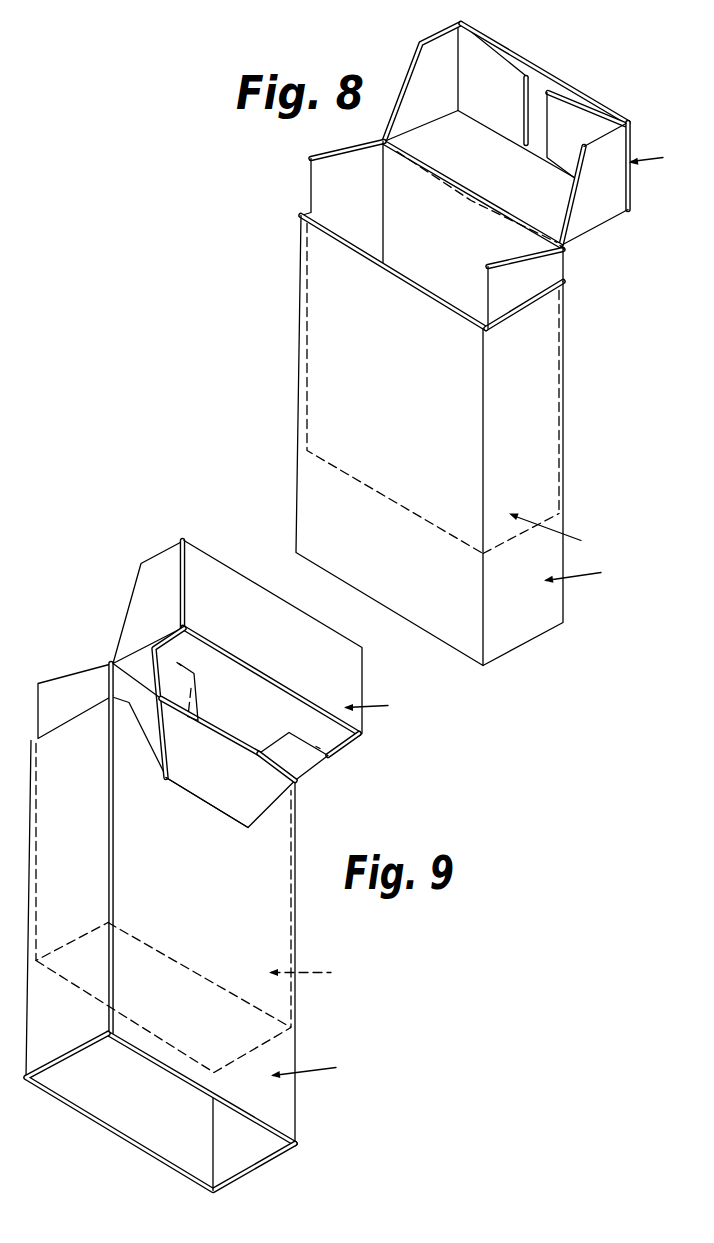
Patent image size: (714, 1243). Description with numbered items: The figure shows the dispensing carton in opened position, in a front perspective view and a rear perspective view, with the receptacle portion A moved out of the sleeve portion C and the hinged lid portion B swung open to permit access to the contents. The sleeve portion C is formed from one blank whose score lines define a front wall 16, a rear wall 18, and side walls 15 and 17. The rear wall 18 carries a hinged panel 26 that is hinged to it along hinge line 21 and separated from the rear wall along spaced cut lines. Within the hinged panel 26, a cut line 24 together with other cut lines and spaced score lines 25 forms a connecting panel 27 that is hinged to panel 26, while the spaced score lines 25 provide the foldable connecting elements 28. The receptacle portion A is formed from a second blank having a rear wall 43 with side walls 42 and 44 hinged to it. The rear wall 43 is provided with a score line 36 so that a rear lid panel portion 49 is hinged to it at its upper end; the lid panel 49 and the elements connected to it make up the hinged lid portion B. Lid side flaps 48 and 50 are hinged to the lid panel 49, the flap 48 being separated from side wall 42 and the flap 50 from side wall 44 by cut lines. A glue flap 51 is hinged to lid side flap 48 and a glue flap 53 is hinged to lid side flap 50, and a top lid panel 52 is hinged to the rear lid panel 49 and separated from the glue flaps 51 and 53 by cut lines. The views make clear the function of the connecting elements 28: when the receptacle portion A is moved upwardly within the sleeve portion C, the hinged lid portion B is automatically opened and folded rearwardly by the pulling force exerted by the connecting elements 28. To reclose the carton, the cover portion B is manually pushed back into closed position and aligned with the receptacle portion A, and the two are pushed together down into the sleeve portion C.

In FIG. 8, the side wall 15 is at (510, 448).
In FIG. 9, the side wall 15 is at (49, 851).
In FIG. 8, the front wall 16 is at (354, 550).
In FIG. 9, the front wall 16 is at (116, 1116).
In FIG. 9, the side wall 17 is at (233, 1150).
In FIG. 9, the rear wall 18 is at (200, 918).
In FIG. 9, the hinge line 21 is at (207, 803).
In FIG. 9, the cut line 24 is at (230, 740).
In FIG. 9, the spaced score lines 25 is at (177, 663).
In FIG. 9, the hinged panel 26 is at (195, 779).
In FIG. 9, the connecting panel 27 is at (253, 693).
In FIG. 8, the foldable connecting elements 28 is at (568, 248).
In FIG. 9, the foldable connecting elements 28 is at (175, 687).
In FIG. 8, the score line 36 is at (450, 185).
In FIG. 8, the side wall 42 is at (335, 208).
In FIG. 8, the rear wall 43 is at (428, 259).
In FIG. 9, the rear wall 43 is at (133, 699).
In FIG. 8, the side wall 44 is at (506, 294).
In FIG. 9, the side wall 44 is at (62, 690).
In FIG. 8, the lid side flap 48 is at (418, 100).
In FIG. 8, the rear lid panel portion 49 is at (486, 186).
In FIG. 8, the lid side flap 50 is at (590, 191).
In FIG. 9, the lid side flap 50 is at (138, 608).
In FIG. 8, the glue flap 51 is at (474, 99).
In FIG. 8, the top lid panel 52 is at (538, 85).
In FIG. 9, the top lid panel 52 is at (256, 646).
In FIG. 8, the glue flap 53 is at (575, 117).
In FIG. 8, the receptacle portion A is at (553, 534).
In FIG. 9, the receptacle portion A is at (308, 974).
In FIG. 8, the hinged lid portion B is at (654, 157).
In FIG. 9, the hinged lid portion B is at (374, 704).
In FIG. 8, the sleeve portion C is at (581, 573).
In FIG. 9, the sleeve portion C is at (311, 1068).